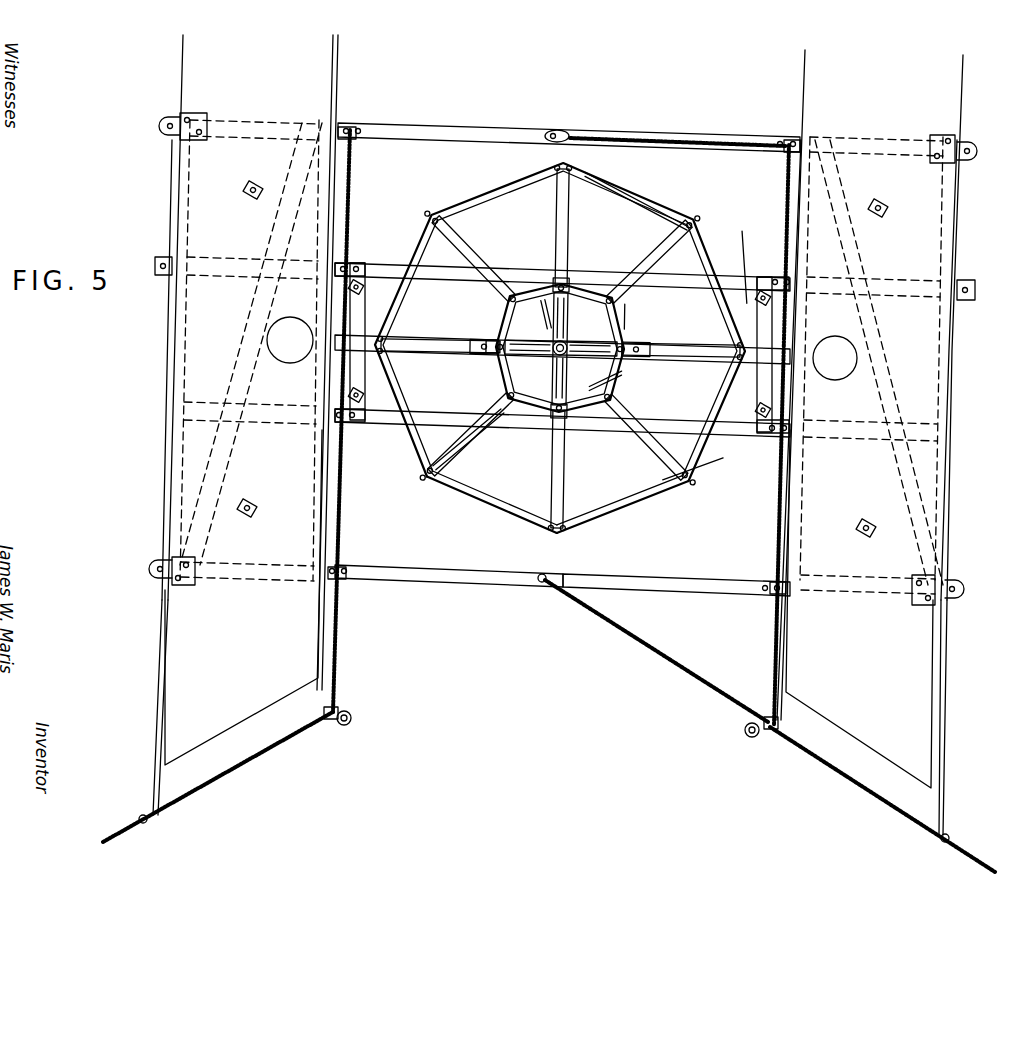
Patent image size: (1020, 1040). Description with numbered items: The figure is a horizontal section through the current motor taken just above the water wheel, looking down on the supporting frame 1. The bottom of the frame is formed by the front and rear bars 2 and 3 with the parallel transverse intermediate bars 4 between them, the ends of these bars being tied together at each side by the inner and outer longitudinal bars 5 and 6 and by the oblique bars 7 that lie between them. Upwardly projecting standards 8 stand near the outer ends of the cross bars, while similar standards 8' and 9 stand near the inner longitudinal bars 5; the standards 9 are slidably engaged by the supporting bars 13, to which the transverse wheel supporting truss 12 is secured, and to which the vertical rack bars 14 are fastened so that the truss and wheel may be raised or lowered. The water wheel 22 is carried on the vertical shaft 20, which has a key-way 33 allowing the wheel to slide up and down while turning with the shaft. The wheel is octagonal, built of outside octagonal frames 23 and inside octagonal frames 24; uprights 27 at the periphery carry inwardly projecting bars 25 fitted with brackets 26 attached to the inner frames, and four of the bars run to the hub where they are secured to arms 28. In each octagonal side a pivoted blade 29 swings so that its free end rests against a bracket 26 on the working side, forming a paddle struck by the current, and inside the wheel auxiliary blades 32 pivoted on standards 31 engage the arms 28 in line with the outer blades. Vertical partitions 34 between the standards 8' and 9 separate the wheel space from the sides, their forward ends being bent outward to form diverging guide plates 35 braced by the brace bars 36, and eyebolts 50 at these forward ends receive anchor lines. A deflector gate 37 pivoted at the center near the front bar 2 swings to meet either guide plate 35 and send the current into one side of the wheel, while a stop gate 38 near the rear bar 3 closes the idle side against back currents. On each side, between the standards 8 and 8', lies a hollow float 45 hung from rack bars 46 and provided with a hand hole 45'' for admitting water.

The supporting frame 1 is at (370, 581).
The front cross bar 2 is at (668, 590).
The rear cross bar 3 is at (462, 126).
The intermediate bars 4 is at (390, 264).
The inner longitudinal bar 5 is at (330, 538).
The outer longitudinal bar 6 is at (168, 500).
The oblique bars 7 is at (228, 460).
The outer standards 8 is at (562, 359).
The inner standards 8' is at (556, 352).
The intermediate supporting standards 9 is at (362, 130).
The wheel supporting bar or truss 12 is at (437, 340).
The supporting bars 13 is at (366, 300).
The rack bars 14 is at (362, 264).
The water wheel shaft 20 is at (561, 348).
The water wheel 22 is at (623, 504).
The outside octagonal frames 23 is at (492, 507).
The inside octagonal frames 24 is at (586, 228).
The bars 25 is at (621, 374).
The brackets 26 is at (559, 432).
The uprights 27 is at (562, 346).
The arms 28 is at (598, 379).
The blade or wing 29 is at (591, 326).
The standards 31 is at (560, 311).
The auxiliary blades 32 is at (584, 316).
The key-way or seat 33 is at (578, 337).
The vertical partitions 34 is at (340, 497).
The guide plates 35 is at (228, 770).
The brace bars 36 is at (158, 717).
The deflector blade or gate 37 is at (666, 660).
The stop plate or gate 38 is at (684, 141).
The hollow float 45 is at (554, 454).
The hand hole 45'' is at (562, 363).
The rack bars 46 is at (247, 196).
The eyebolts 50 is at (352, 718).